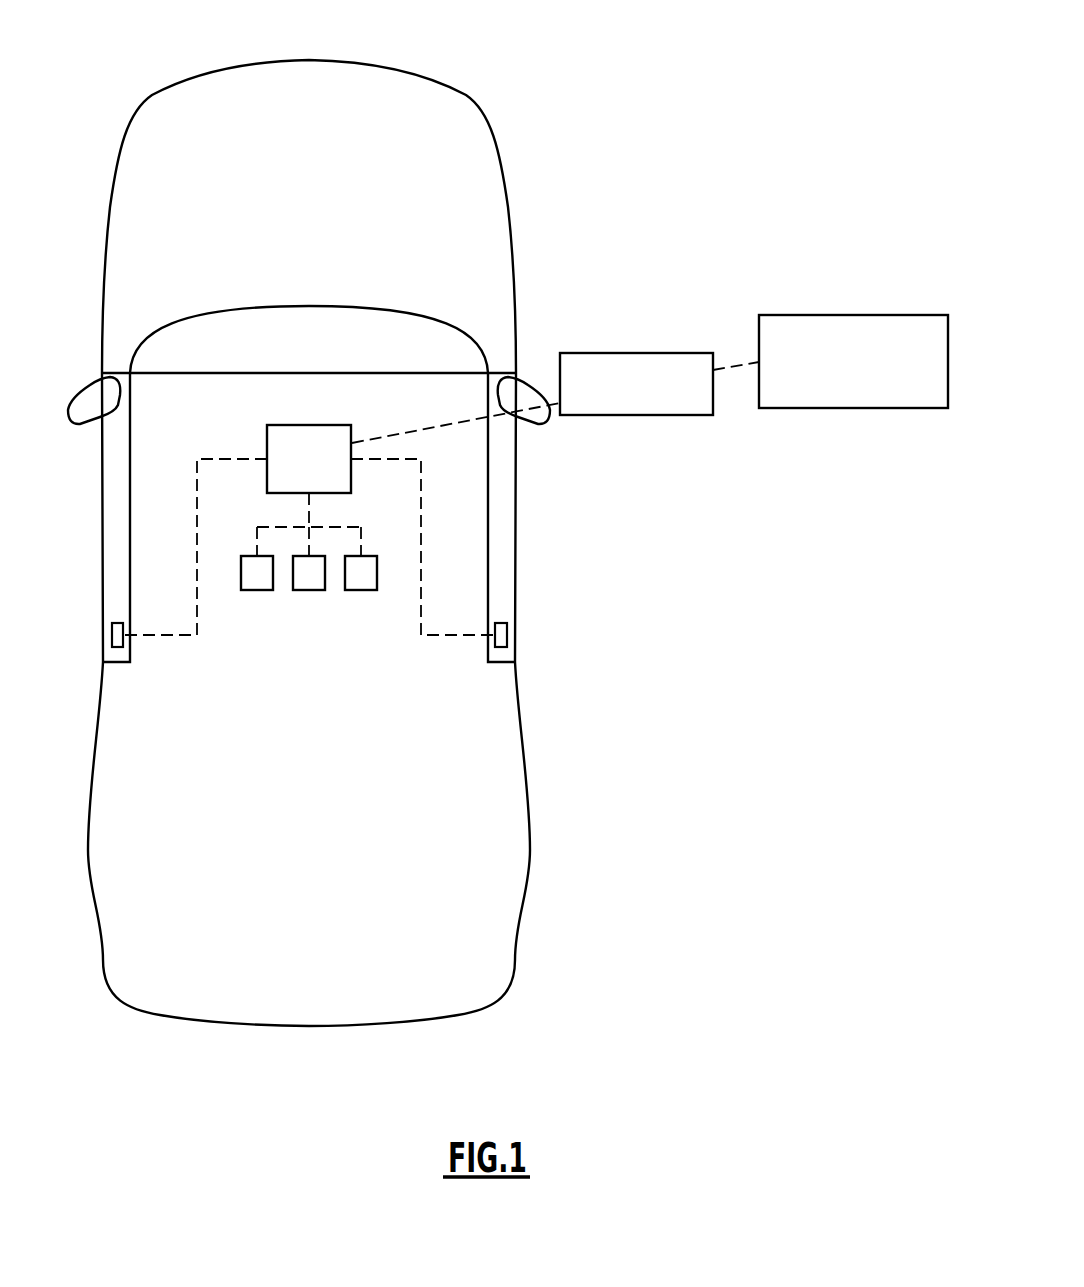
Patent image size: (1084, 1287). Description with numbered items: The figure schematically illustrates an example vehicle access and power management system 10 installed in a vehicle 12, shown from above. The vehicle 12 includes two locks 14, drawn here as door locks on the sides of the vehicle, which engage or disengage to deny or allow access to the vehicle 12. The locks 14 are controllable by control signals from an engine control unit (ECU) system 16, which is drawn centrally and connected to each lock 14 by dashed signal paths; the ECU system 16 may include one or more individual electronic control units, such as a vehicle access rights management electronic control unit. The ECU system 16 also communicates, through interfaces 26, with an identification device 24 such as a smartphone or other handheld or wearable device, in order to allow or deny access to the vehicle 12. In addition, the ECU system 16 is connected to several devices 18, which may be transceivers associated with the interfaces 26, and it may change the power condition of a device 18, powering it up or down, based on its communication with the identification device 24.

The vehicle access and power management system 10 is at (333, 637).
The vehicle 12 is at (123, 258).
The locks 14 is at (120, 646).
The engine control unit (ECU) system 16 is at (273, 443).
The devices 18 is at (350, 590).
The identification device 24 is at (887, 315).
The interfaces 26 is at (637, 353).